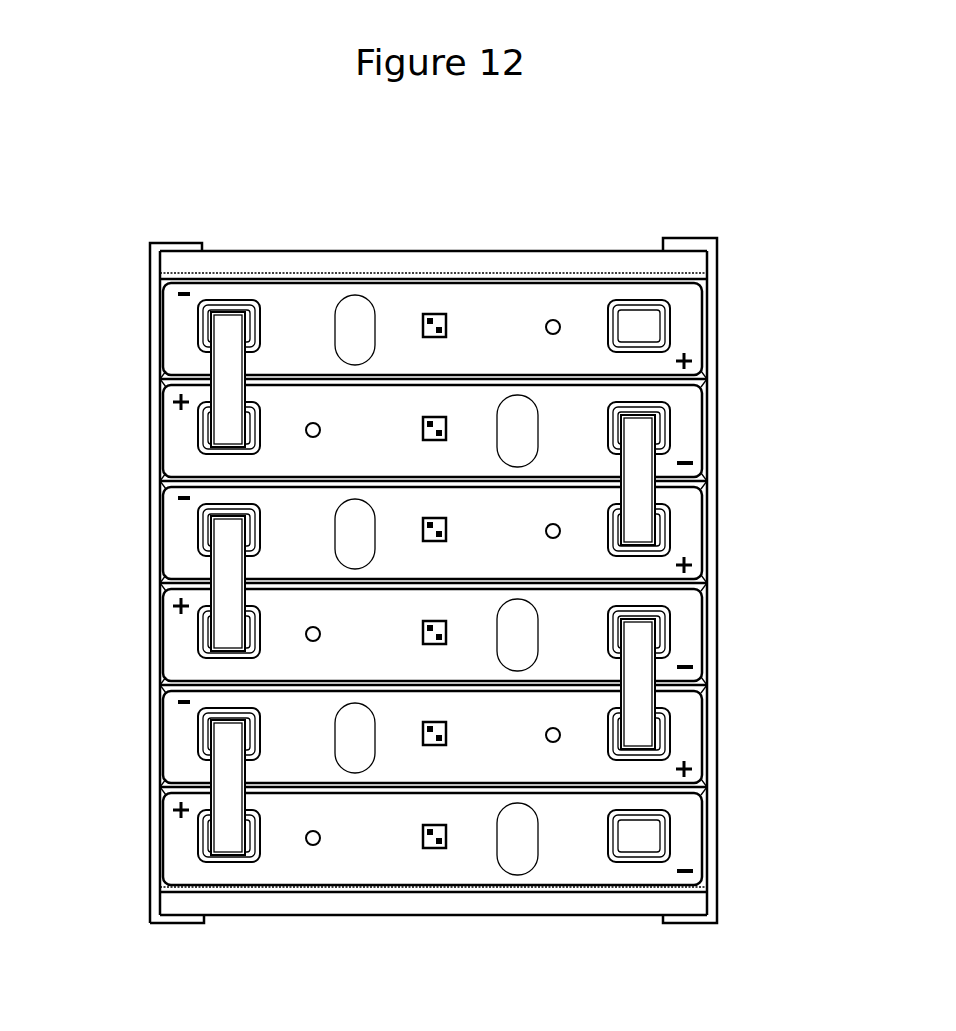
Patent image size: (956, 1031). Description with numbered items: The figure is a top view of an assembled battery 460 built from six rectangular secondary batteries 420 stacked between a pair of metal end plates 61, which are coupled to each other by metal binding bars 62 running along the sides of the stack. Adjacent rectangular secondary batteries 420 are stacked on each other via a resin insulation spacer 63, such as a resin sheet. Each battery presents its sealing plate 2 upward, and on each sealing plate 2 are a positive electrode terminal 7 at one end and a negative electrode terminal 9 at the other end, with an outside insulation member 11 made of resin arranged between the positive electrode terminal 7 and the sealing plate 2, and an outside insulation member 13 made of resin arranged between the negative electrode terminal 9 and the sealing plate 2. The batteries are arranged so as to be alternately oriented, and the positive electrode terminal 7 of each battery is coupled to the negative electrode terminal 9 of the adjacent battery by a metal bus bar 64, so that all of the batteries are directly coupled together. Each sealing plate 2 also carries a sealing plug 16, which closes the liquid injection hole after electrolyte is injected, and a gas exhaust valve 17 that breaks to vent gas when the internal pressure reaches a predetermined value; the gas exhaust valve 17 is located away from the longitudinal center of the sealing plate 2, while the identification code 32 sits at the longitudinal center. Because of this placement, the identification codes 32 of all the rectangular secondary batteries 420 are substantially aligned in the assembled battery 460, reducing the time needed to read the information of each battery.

The assembled battery 460 is at (155, 132).
The binding bar 62 is at (155, 622).
The end plate 61 is at (254, 268).
The insulation spacer 63 is at (699, 375).
The sealing plate 2 is at (305, 300).
The rectangular secondary battery 420 is at (686, 290).
The gas exhaust valve 17 is at (357, 296).
The identification code 32 is at (431, 312).
The sealing plug 16 is at (558, 320).
The outside insulation member 13 is at (222, 300).
The negative electrode terminal 9 is at (201, 313).
The outside insulation member 11 is at (637, 300).
The positive electrode terminal 7 is at (205, 432).
The bus bar 64 is at (228, 370).